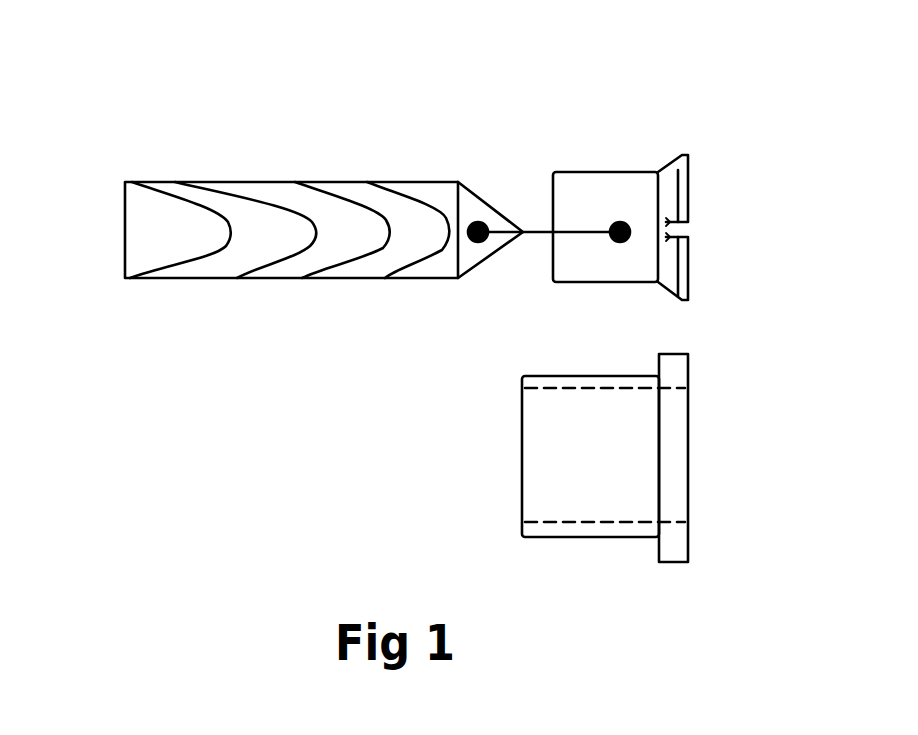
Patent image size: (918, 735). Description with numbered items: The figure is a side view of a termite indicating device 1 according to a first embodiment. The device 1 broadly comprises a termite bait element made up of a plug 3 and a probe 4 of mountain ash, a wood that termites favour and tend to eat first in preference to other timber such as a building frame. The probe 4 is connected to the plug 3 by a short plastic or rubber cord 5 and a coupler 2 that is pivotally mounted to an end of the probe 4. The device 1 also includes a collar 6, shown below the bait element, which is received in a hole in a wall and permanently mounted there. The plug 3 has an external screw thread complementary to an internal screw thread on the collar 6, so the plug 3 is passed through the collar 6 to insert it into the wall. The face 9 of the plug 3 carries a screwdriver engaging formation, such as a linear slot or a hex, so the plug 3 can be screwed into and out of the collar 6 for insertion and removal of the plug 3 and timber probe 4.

The termite indicating device 1 is at (178, 135).
The coupler 2 is at (483, 205).
The plug 3 is at (625, 168).
The probe 4 is at (302, 180).
The cord 5 is at (525, 235).
The collar 6 is at (688, 403).
The face 9 is at (688, 203).